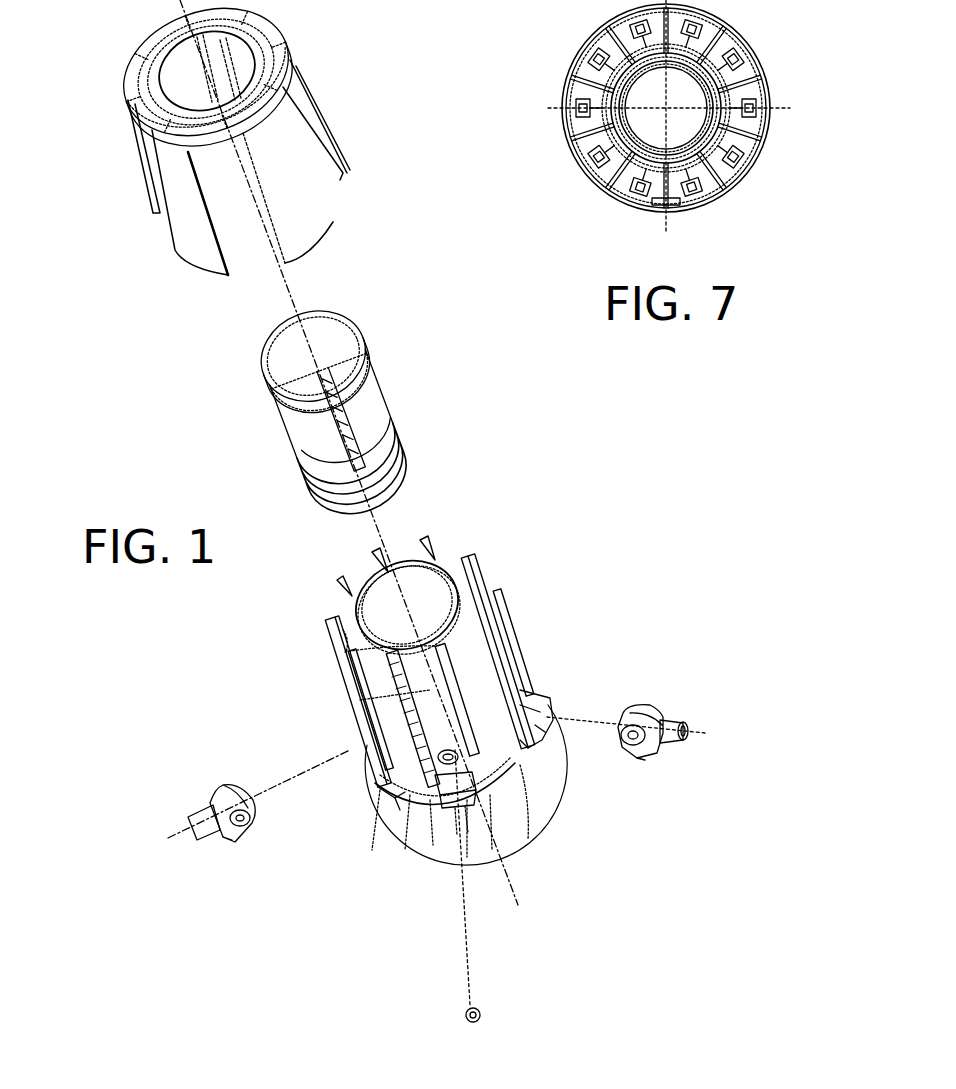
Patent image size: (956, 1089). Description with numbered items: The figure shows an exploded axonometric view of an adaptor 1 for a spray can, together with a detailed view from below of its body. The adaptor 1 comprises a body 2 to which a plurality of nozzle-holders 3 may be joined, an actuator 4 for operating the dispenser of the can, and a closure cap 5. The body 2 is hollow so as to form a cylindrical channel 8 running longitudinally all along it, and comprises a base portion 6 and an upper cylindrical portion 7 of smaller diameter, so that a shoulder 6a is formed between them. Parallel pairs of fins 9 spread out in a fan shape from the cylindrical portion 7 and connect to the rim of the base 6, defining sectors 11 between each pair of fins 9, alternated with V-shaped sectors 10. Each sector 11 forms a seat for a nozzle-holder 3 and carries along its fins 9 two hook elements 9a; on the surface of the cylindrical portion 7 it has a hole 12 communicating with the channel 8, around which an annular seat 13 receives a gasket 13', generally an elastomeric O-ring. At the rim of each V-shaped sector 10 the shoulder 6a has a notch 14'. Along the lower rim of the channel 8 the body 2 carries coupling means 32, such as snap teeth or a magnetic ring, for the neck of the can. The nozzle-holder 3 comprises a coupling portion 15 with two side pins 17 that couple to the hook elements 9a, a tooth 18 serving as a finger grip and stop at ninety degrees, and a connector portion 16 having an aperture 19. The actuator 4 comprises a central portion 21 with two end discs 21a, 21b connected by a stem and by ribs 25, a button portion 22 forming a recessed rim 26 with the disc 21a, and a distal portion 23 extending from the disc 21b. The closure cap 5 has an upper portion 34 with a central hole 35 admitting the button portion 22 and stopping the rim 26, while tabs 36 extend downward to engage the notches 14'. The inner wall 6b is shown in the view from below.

In FIG. 1, the adaptor 1 is at (447, 320).
In FIG. 1, the body 2 is at (444, 754).
In FIG. 7, the body 2 is at (612, 116).
In FIG. 1, the nozzle-holder 3 is at (440, 760).
In FIG. 1, the actuator 4 is at (325, 399).
In FIG. 1, the closure cap 5 is at (236, 141).
In FIG. 1, the base portion 6 is at (453, 840).
In FIG. 7, the base portion 6 is at (710, 22).
In FIG. 1, the shoulder 6a is at (430, 830).
In FIG. 7, the inner ring wall 6b is at (750, 90).
In FIG. 1, the upper cylindrical portion 7 is at (463, 618).
In FIG. 1, the cylindrical channel 8 is at (430, 594).
In FIG. 7, the cylindrical channel 8 is at (676, 116).
In FIG. 1, the fins 9 is at (440, 567).
In FIG. 1, the hook elements 9a is at (533, 683).
In FIG. 1, the V-shaped sectors 10 is at (500, 767).
In FIG. 1, the sectors 11 is at (430, 702).
In FIG. 1, the hole 12 is at (457, 827).
In FIG. 1, the annular seat 13 is at (370, 741).
In FIG. 1, the gasket 13' is at (510, 886).
In FIG. 1, the notch 14' is at (492, 835).
In FIG. 1, the coupling portion 15 is at (225, 792).
In FIG. 1, the connector portion 16 is at (210, 833).
In FIG. 1, the pins 17 is at (247, 827).
In FIG. 1, the tooth 18 is at (228, 843).
In FIG. 1, the aperture 19 is at (688, 728).
In FIG. 1, the central portion 21 is at (287, 452).
In FIG. 1, the end disc 21a is at (363, 345).
In FIG. 1, the end disc 21b is at (383, 443).
In FIG. 1, the button portion 22 is at (337, 330).
In FIG. 1, the distal portion 23 is at (415, 477).
In FIG. 1, the ribs 25 is at (360, 397).
In FIG. 1, the recessed rim 26 is at (267, 375).
In FIG. 7, the coupling means 32 is at (590, 96).
In FIG. 1, the upper portion 34 is at (267, 70).
In FIG. 1, the central hole 35 is at (172, 88).
In FIG. 1, the tabs 36 is at (173, 180).